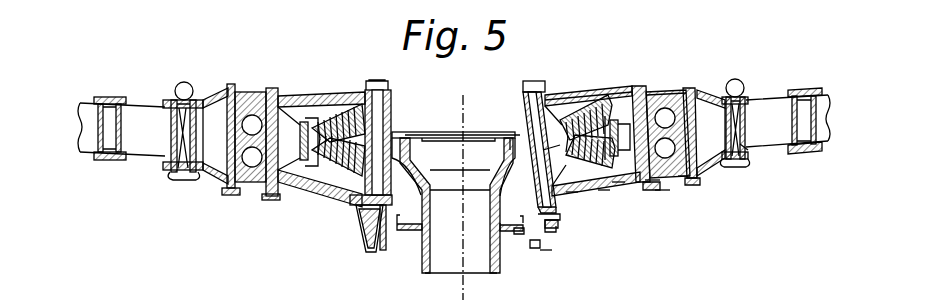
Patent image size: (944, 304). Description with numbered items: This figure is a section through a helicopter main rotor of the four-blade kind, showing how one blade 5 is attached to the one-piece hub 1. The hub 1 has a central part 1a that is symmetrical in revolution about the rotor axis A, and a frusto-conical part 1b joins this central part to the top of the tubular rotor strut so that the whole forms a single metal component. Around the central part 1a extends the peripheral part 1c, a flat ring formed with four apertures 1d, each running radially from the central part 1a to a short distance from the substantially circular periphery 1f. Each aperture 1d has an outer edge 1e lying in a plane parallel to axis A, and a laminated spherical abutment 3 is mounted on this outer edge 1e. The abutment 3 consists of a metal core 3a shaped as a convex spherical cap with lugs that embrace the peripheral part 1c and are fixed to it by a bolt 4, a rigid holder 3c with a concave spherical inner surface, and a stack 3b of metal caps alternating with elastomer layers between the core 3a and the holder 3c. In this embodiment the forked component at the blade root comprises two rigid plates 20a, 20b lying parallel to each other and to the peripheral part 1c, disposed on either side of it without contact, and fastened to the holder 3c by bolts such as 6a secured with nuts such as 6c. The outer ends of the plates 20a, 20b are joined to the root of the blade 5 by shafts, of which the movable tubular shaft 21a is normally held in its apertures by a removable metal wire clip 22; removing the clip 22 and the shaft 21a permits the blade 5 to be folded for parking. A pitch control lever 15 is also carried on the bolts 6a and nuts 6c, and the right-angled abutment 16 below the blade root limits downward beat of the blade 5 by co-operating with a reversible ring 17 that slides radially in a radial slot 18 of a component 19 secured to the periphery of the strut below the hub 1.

The hub 1 is at (397, 126).
The central part 1a is at (505, 130).
The frusto-conical part 1b is at (536, 206).
The peripheral part 1c is at (651, 132).
The aperture 1d is at (523, 148).
The outer edge 1e is at (545, 152).
The periphery 1f is at (683, 178).
The laminated spherical abutment 3 is at (576, 105).
The core 3a is at (621, 184).
The stack 3b is at (605, 194).
The holder 3c is at (572, 194).
The bolt 4 is at (656, 184).
The blade 5 is at (770, 109).
The bolt 6a is at (546, 213).
The nut 6c is at (560, 220).
The pitch control lever 15 is at (661, 106).
The abutment 16 is at (536, 249).
The reversible ring 17 is at (522, 234).
The radial slot 18 is at (510, 209).
The component 19 is at (504, 232).
The plate 20a is at (596, 98).
The plate 20b is at (665, 196).
The shaft 21a is at (748, 144).
The metal wire clip 22 is at (730, 96).
The rotor axis A is at (460, 284).